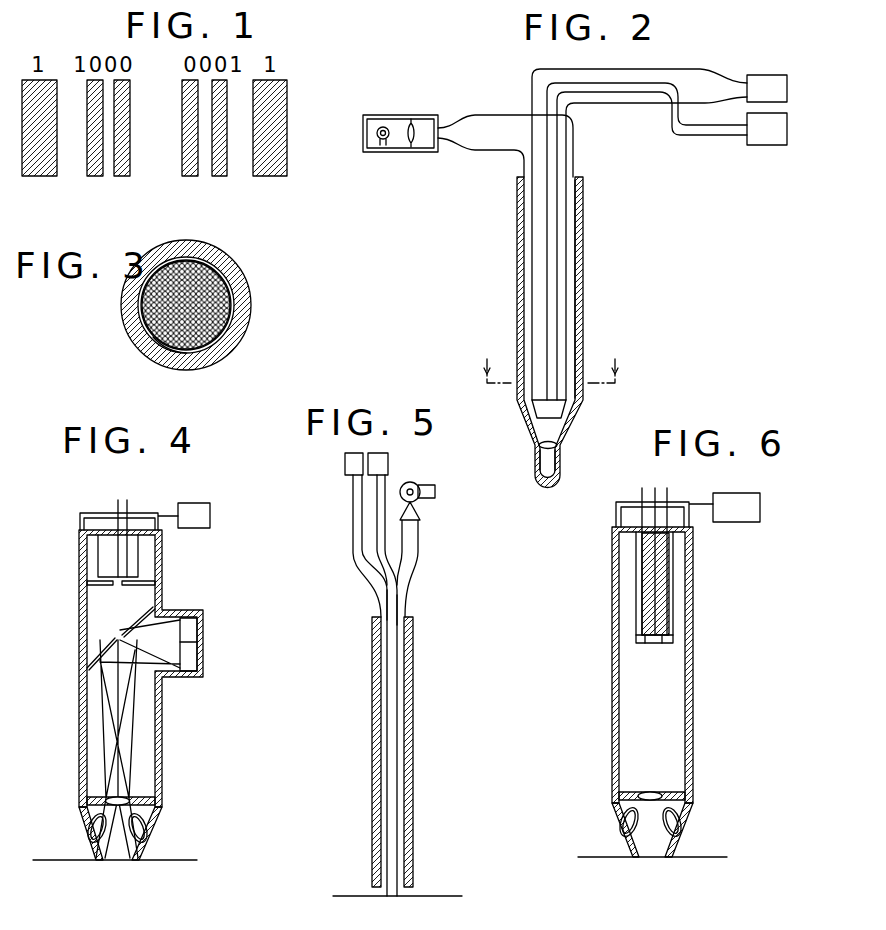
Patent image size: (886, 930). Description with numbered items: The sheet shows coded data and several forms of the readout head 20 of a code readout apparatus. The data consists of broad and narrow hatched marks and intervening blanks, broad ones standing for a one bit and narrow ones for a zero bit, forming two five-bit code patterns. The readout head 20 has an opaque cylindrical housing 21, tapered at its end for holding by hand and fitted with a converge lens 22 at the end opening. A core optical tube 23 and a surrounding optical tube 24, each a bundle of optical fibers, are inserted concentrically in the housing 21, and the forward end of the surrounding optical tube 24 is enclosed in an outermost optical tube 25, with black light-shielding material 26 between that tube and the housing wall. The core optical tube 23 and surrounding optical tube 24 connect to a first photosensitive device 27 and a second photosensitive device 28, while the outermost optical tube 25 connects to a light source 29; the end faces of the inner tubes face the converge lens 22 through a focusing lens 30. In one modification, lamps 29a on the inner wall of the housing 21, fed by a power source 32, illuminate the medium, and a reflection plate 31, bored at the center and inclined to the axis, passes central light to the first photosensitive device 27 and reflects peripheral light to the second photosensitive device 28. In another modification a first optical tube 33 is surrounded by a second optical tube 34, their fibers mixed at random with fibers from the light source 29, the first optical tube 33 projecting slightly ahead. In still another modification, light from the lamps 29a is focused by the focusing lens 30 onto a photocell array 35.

In FIG. 2, the readout head 20 is at (587, 213).
In FIG. 3, the readout head 20 is at (264, 258).
In FIG. 4, the readout head 20 is at (108, 495).
In FIG. 6, the readout head 20 is at (650, 484).
In FIG. 2, the cylindrical housing 21 is at (577, 270).
In FIG. 3, the cylindrical housing 21 is at (248, 308).
In FIG. 4, the cylindrical housing 21 is at (162, 740).
In FIG. 5, the cylindrical housing 21 is at (413, 748).
In FIG. 6, the cylindrical housing 21 is at (693, 710).
In FIG. 2, the converge lens 22 is at (528, 470).
In FIG. 2, the core optical tube 23 is at (553, 306).
In FIG. 3, the core optical tube 23 is at (233, 289).
In FIG. 2, the surrounding optical tube 24 is at (540, 306).
In FIG. 3, the surrounding optical tube 24 is at (230, 328).
In FIG. 2, the outermost optical tube 25 is at (525, 270).
In FIG. 3, the outermost optical tube 25 is at (220, 353).
In FIG. 2, the black light-shielding material 26 is at (577, 228).
In FIG. 2, the first photosensitive device 27 is at (766, 145).
In FIG. 4, the first photosensitive device 27 is at (130, 570).
In FIG. 5, the first photosensitive device 27 is at (388, 463).
In FIG. 2, the second photosensitive device 28 is at (766, 75).
In FIG. 4, the second photosensitive device 28 is at (183, 630).
In FIG. 5, the second photosensitive device 28 is at (345, 463).
In FIG. 2, the light source 29 is at (407, 115).
In FIG. 5, the light source 29 is at (425, 498).
In FIG. 4, the lamps 29a is at (92, 840).
In FIG. 6, the lamps 29a is at (640, 830).
In FIG. 2, the focusing lens 30 is at (551, 437).
In FIG. 4, the focusing lens 30 is at (120, 797).
In FIG. 6, the focusing lens 30 is at (655, 790).
In FIG. 4, the reflection plate 31 is at (87, 652).
In FIG. 4, the power source 32 is at (210, 517).
In FIG. 6, the power source 32 is at (760, 508).
In FIG. 5, the first optical tube 33 is at (395, 582).
In FIG. 5, the second optical tube 34 is at (400, 610).
In FIG. 6, the photocell array 35 is at (672, 641).